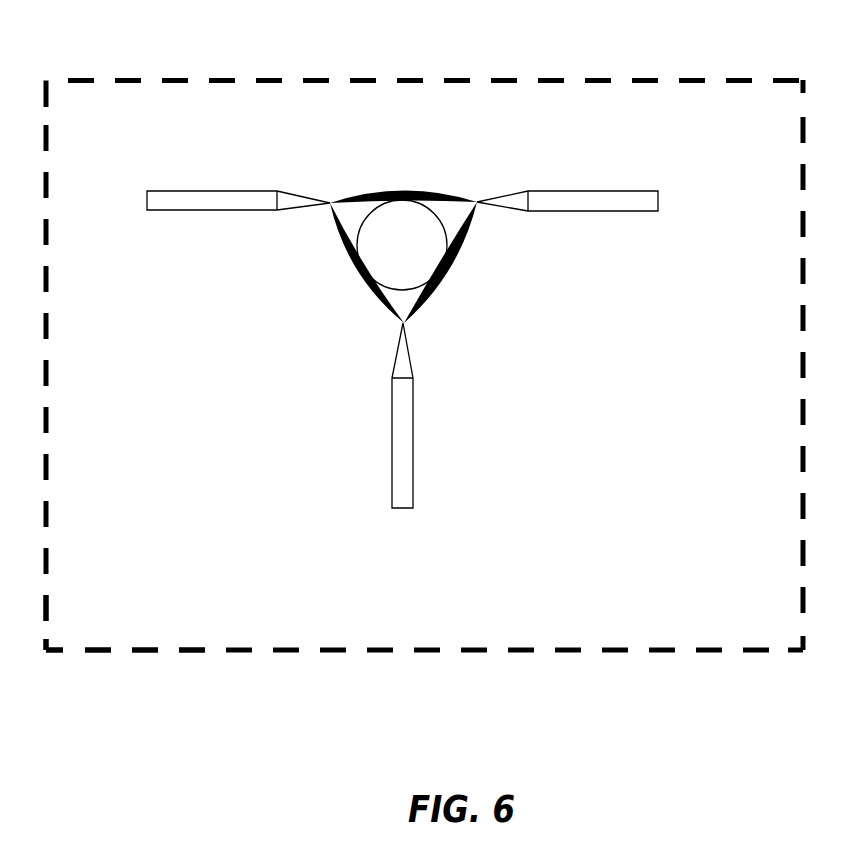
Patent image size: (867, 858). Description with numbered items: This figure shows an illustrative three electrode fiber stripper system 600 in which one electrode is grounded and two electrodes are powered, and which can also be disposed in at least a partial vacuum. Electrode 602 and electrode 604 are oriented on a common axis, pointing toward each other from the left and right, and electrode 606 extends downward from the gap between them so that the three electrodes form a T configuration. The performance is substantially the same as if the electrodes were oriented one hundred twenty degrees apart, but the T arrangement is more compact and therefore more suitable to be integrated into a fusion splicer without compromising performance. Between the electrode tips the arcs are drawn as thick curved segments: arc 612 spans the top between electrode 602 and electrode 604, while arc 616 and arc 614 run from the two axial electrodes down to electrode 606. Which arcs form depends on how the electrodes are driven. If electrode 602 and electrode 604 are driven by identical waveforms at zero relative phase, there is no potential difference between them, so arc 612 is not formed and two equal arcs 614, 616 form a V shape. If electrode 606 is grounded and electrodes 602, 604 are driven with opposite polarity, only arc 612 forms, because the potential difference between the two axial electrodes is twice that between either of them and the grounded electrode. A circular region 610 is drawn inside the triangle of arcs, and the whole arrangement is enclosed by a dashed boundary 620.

The three electrode fiber stripper system 600 is at (670, 71).
The electrode 602 is at (218, 193).
The electrode 604 is at (593, 195).
The electrode 606 is at (415, 467).
The plasma region 610 is at (387, 278).
The arc 612 is at (428, 191).
The arc 614 is at (468, 237).
The arc 616 is at (350, 265).
The enclosure 620 is at (182, 648).